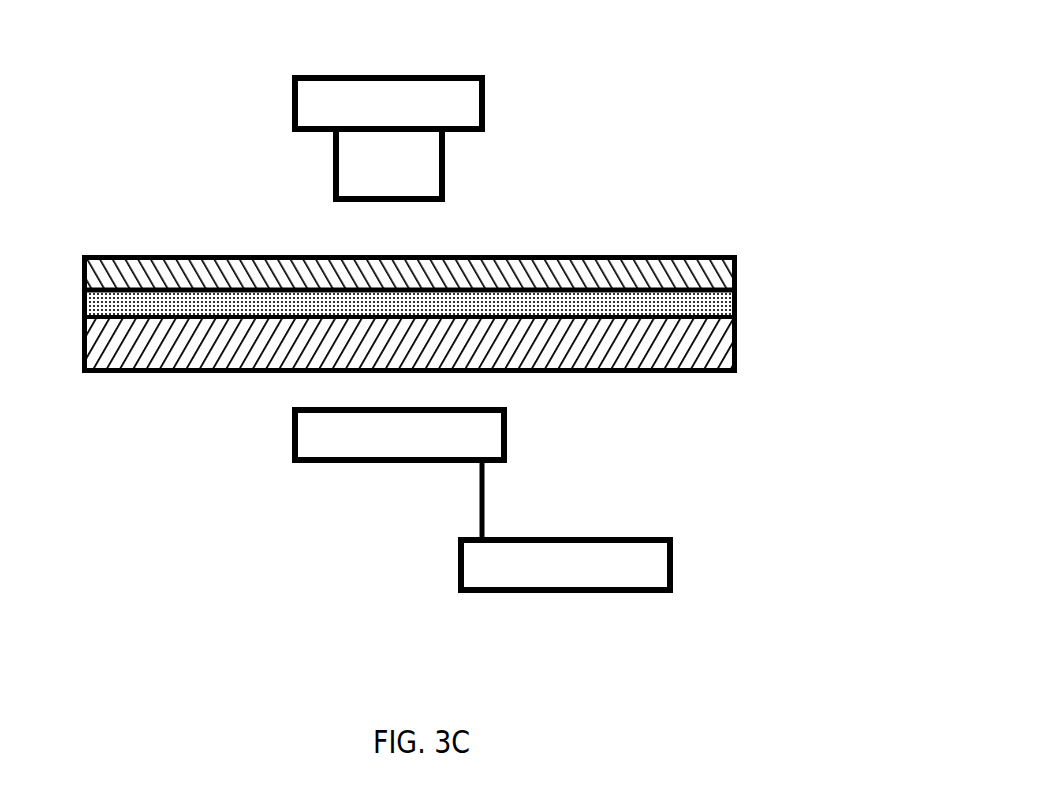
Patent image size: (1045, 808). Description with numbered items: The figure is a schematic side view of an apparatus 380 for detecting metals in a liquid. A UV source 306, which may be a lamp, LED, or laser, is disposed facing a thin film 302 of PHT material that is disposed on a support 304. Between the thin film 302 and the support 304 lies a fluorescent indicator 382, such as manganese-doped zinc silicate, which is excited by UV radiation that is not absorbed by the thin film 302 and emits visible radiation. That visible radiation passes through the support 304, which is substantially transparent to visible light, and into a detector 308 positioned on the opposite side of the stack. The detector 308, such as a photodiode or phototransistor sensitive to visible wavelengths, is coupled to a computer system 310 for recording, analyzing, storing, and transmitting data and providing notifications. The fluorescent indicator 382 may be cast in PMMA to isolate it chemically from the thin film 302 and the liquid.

The apparatus 380 is at (512, 38).
The UV source 306 is at (485, 107).
The thin film 302 is at (630, 255).
The fluorescent indicator 382 is at (737, 297).
The support 304 is at (737, 338).
The UV detector 308 is at (507, 438).
The computer system 310 is at (565, 565).